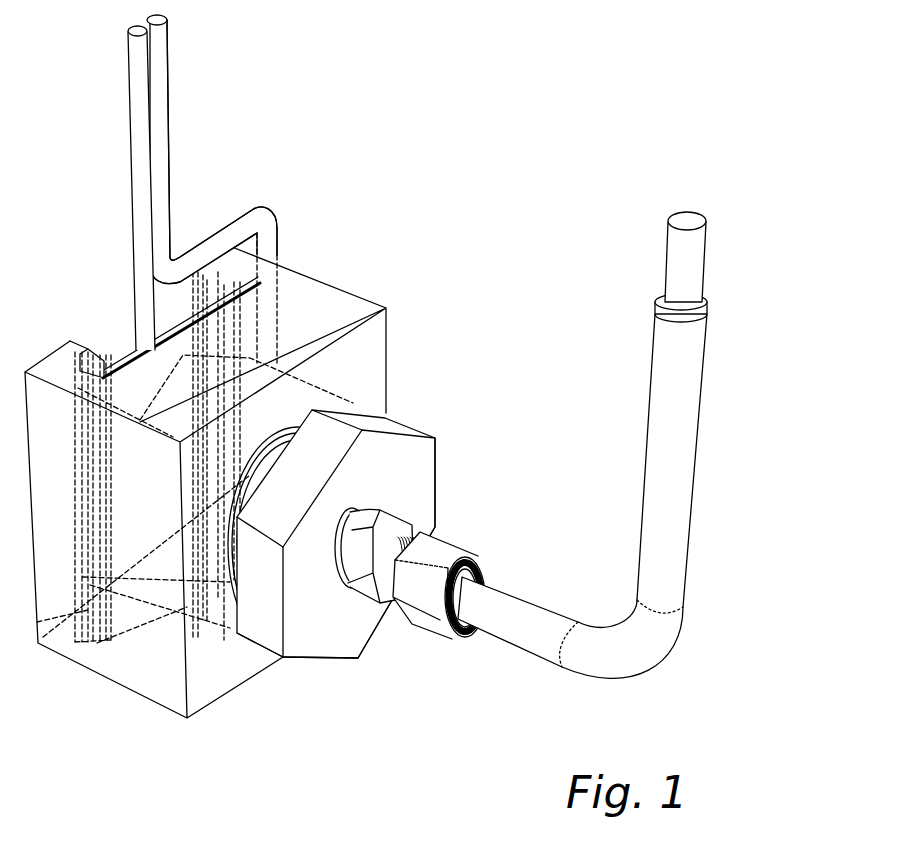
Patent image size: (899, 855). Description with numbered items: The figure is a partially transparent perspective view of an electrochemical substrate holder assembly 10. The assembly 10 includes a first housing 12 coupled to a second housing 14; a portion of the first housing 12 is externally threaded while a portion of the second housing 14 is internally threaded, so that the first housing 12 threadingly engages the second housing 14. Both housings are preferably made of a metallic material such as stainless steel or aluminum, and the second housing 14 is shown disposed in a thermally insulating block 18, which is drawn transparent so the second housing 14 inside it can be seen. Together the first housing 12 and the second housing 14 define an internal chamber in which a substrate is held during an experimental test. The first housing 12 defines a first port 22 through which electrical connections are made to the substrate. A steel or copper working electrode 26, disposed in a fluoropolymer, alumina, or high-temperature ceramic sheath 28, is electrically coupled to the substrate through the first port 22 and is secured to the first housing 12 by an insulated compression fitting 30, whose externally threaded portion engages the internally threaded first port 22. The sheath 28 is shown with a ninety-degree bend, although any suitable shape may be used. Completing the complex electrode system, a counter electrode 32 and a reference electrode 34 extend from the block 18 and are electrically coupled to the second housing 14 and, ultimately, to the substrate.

The electrochemical substrate holder assembly 10 is at (406, 403).
The first housing 12 is at (393, 418).
The second housing 14 is at (313, 392).
The thermally insulating block 18 is at (118, 690).
The first port 22 is at (336, 604).
The working electrode 26 is at (688, 221).
The sheath 28 is at (677, 450).
The insulated compression fitting 30 is at (413, 625).
The counter electrode 32 is at (133, 170).
The reference electrode 34 is at (213, 228).